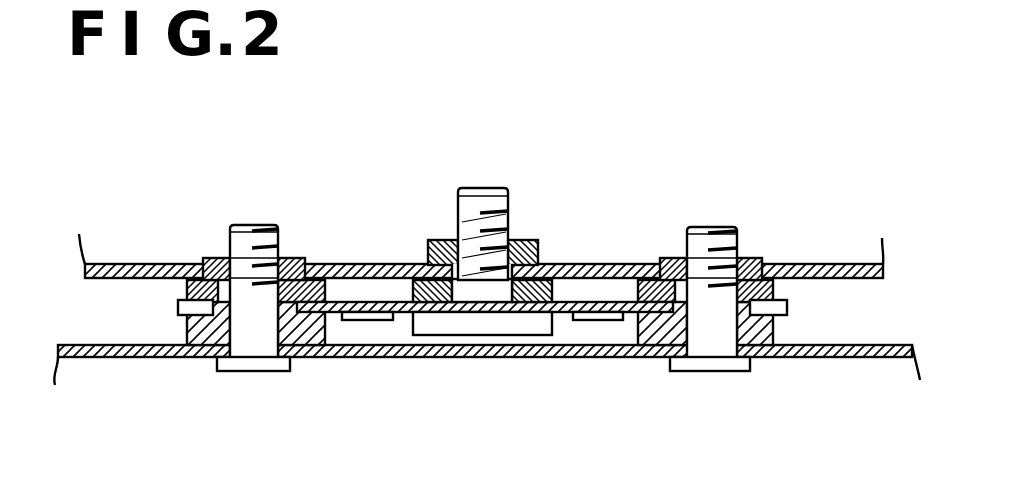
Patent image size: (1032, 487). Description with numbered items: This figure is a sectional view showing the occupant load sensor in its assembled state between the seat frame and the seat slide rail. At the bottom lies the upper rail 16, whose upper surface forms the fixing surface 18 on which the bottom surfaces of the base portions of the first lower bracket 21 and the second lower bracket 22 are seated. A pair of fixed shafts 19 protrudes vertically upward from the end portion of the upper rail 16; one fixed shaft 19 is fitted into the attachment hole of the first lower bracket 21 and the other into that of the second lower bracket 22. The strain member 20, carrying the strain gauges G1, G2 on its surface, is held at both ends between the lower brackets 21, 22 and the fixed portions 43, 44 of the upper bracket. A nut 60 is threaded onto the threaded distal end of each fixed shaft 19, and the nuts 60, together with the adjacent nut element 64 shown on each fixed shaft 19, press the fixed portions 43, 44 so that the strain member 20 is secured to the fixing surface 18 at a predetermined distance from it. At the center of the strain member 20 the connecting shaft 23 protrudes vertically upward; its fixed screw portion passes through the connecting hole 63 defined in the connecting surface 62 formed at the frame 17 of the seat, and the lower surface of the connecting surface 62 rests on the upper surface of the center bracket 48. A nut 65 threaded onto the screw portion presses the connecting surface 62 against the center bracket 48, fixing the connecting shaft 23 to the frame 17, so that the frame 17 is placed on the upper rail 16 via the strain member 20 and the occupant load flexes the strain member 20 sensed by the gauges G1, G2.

The upper rail 16 is at (113, 357).
The frame 17 is at (848, 264).
The fixing surface 18 is at (838, 345).
The fixed shaft 19 is at (249, 240).
The strain member 20 is at (573, 312).
The first lower bracket 21 is at (298, 328).
The second lower bracket 22 is at (762, 333).
The connecting shaft 23 is at (480, 335).
The fixed portion 43 is at (183, 293).
The fixed portion 44 is at (780, 297).
The center bracket 48 is at (413, 280).
The nut 60 is at (212, 258).
The connecting surface 62 is at (113, 290).
The connecting hole 63 is at (468, 265).
The nut 64 is at (287, 258).
The nut 65 is at (522, 240).
The strain gauge G1 is at (362, 316).
The strain gauge G2 is at (595, 316).